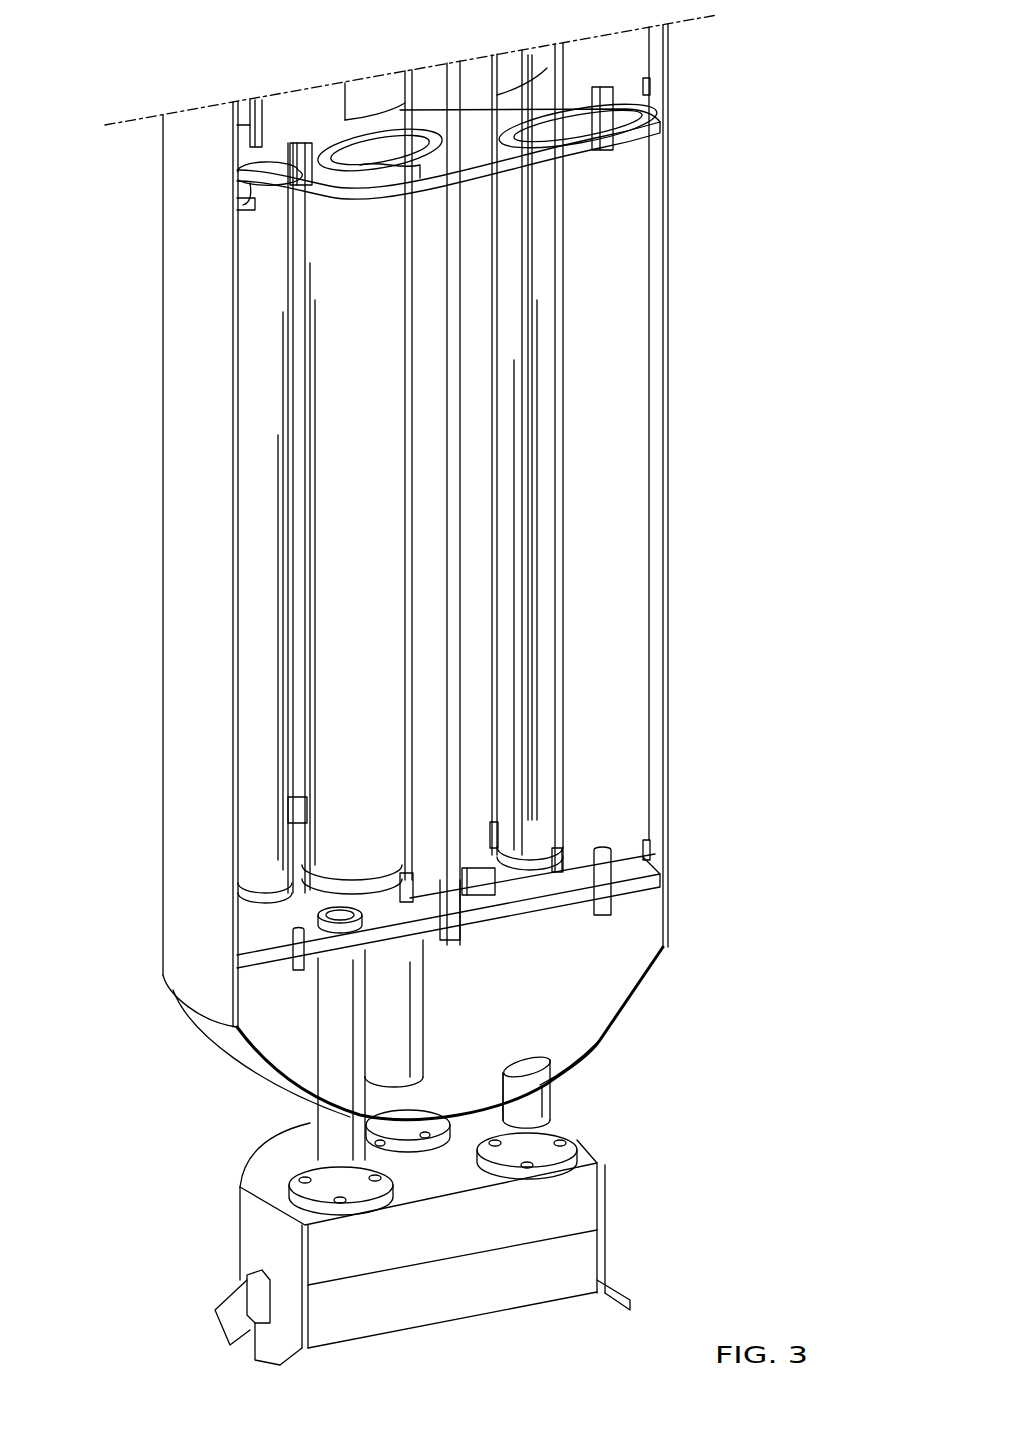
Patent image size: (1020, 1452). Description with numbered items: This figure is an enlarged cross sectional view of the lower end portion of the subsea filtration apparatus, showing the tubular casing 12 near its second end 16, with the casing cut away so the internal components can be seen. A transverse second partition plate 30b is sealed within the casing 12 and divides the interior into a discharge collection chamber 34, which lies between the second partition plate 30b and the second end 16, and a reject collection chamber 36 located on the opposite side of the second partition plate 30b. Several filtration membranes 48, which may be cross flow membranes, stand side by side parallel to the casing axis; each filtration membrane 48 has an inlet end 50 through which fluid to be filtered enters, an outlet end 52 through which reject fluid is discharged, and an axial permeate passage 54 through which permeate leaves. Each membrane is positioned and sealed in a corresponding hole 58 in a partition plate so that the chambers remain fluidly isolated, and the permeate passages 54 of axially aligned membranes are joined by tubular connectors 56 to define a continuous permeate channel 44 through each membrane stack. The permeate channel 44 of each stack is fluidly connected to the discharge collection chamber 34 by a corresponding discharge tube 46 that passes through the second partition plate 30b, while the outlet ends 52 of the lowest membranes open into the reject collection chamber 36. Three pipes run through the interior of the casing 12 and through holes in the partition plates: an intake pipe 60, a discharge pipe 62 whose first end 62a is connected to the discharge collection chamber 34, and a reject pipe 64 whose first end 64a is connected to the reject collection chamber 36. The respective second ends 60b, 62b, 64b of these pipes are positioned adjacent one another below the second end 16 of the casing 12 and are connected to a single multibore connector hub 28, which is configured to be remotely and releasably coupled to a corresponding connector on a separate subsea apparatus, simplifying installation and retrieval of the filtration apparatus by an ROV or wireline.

The tubular casing 12 is at (158, 633).
The second end 16 is at (658, 969).
The multibore connector hub 28 is at (248, 1257).
The second partition plate 30b is at (658, 878).
The discharge collection chamber 34 is at (605, 1008).
The reject collection chamber 36 is at (670, 688).
The permeate channel 44 is at (461, 406).
The discharge tube 46 is at (294, 973).
The filtration membrane 48 is at (420, 517).
The inlet end 50 is at (650, 140).
The outlet end 52 is at (538, 78).
The permeate passage 54 is at (453, 512).
The tubular connector 56 is at (658, 118).
The hole 58 is at (258, 185).
The intake pipe 60 is at (425, 1012).
The second end of intake pipe 60b is at (413, 1154).
The discharge pipe 62 is at (552, 1095).
The first end of discharge pipe 62a is at (536, 1063).
The second end of discharge pipe 62b is at (565, 1150).
The reject pipe 64 is at (325, 1147).
The first end of reject pipe 64a is at (316, 917).
The second end of reject pipe 64b is at (292, 1180).